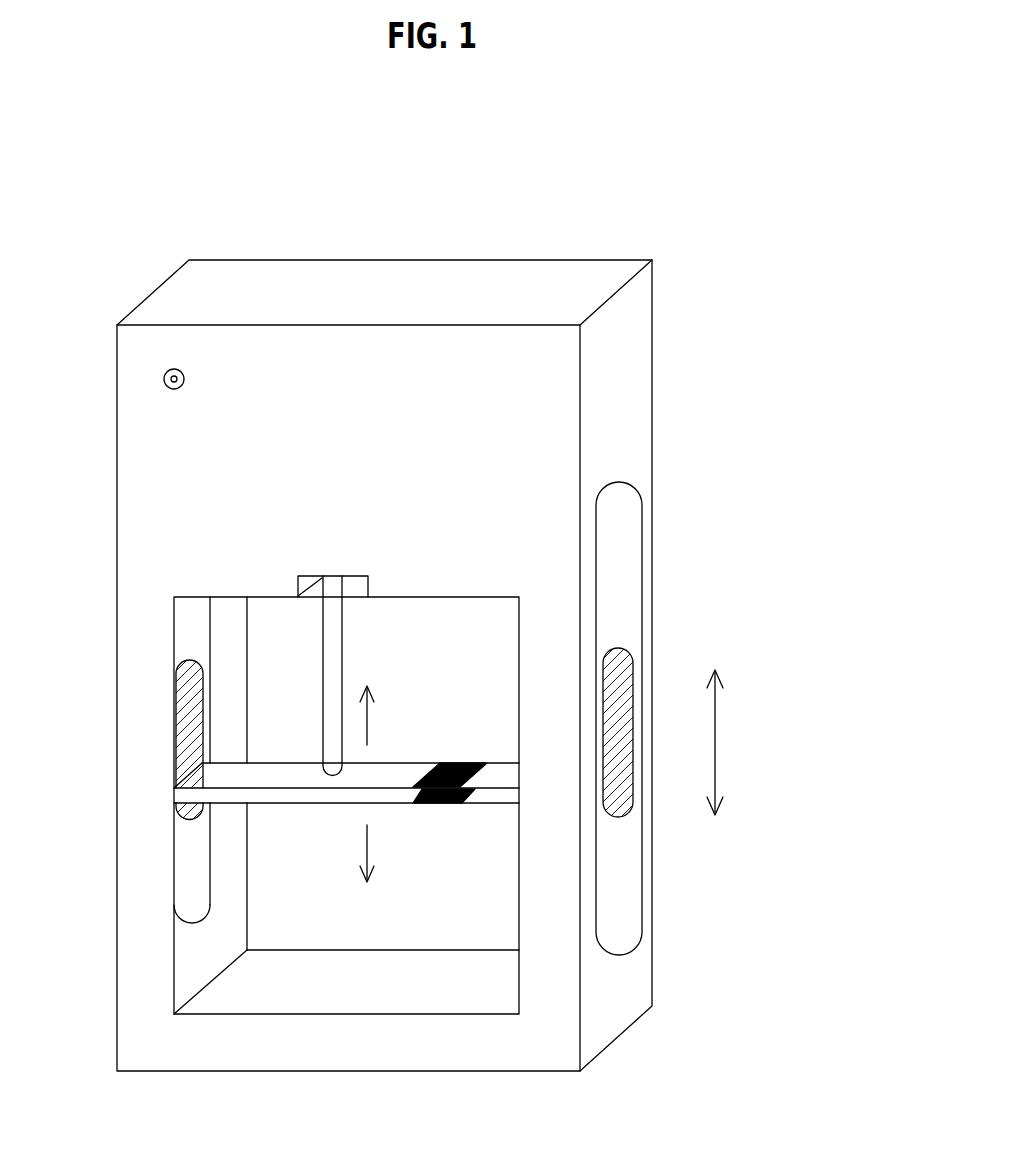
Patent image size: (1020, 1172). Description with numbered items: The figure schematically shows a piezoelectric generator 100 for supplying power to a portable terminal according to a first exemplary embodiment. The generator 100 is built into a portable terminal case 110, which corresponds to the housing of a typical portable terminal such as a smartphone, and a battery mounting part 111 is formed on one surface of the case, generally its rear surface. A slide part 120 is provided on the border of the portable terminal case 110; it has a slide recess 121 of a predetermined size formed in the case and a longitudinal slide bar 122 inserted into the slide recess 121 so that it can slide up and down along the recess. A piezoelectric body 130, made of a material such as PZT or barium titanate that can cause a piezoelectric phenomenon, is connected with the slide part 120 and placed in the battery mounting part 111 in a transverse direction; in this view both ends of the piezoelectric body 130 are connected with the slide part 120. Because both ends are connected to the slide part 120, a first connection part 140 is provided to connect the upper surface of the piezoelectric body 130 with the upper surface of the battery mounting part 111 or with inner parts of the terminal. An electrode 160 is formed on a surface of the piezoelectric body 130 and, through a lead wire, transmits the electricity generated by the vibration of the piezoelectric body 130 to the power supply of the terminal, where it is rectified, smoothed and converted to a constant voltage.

The piezoelectric generator 100 is at (438, 193).
The portable terminal case 110 is at (543, 432).
The battery mounting part 111 is at (398, 893).
The slide part 120 is at (778, 510).
The slide recess 121 is at (608, 557).
The slide bar 122 is at (603, 688).
The piezoelectric body 130 is at (185, 797).
The first connection part 140 is at (330, 650).
The electrode 160 is at (462, 763).